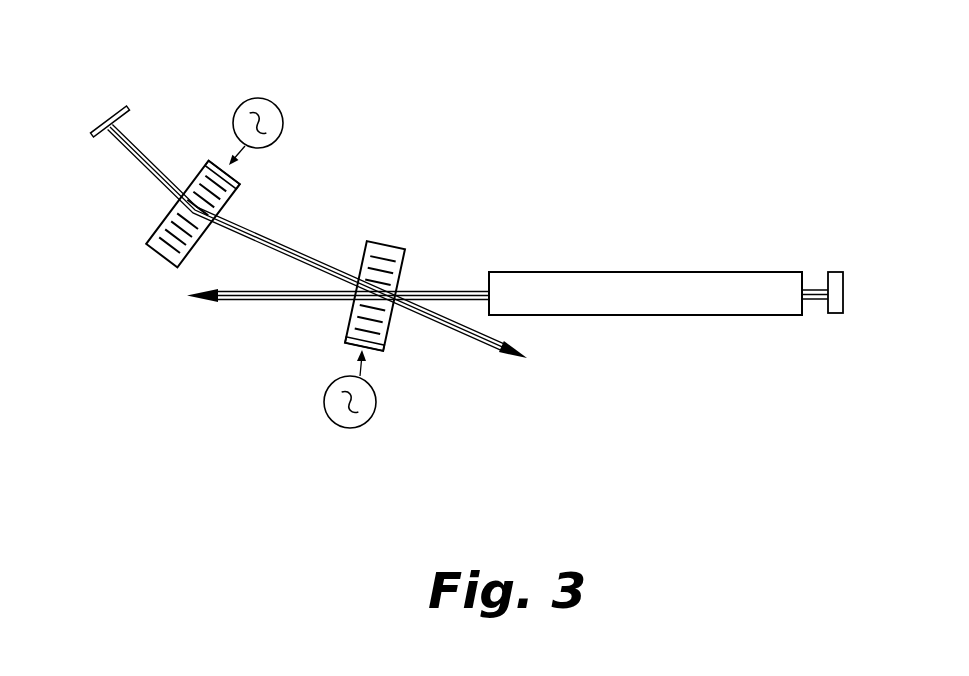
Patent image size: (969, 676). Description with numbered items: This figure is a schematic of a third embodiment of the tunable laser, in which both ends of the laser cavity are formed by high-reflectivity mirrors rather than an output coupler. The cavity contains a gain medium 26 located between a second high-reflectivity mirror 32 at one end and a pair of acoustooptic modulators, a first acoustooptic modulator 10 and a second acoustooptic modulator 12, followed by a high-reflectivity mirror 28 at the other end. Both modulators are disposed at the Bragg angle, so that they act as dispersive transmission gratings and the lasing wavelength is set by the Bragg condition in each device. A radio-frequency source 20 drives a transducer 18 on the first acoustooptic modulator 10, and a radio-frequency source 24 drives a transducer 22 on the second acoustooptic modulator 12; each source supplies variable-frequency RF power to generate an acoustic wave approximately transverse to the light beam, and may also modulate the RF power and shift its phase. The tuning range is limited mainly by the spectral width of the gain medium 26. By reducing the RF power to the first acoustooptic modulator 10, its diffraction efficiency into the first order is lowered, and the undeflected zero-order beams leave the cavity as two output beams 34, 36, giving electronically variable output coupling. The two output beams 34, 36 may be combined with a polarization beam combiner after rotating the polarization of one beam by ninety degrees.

The acoustooptic modulator 10 is at (418, 262).
The acoustooptic modulator 12 is at (186, 178).
The transducer 18 is at (339, 352).
The radio-frequency source 20 is at (375, 407).
The transducer 22 is at (246, 170).
The radio-frequency source 24 is at (283, 128).
The gain medium 26 is at (582, 264).
The high-reflectivity mirror 28 is at (103, 117).
The second high-reflectivity mirror 32 is at (840, 317).
The output beam 34 is at (470, 338).
The output beam 36 is at (248, 302).